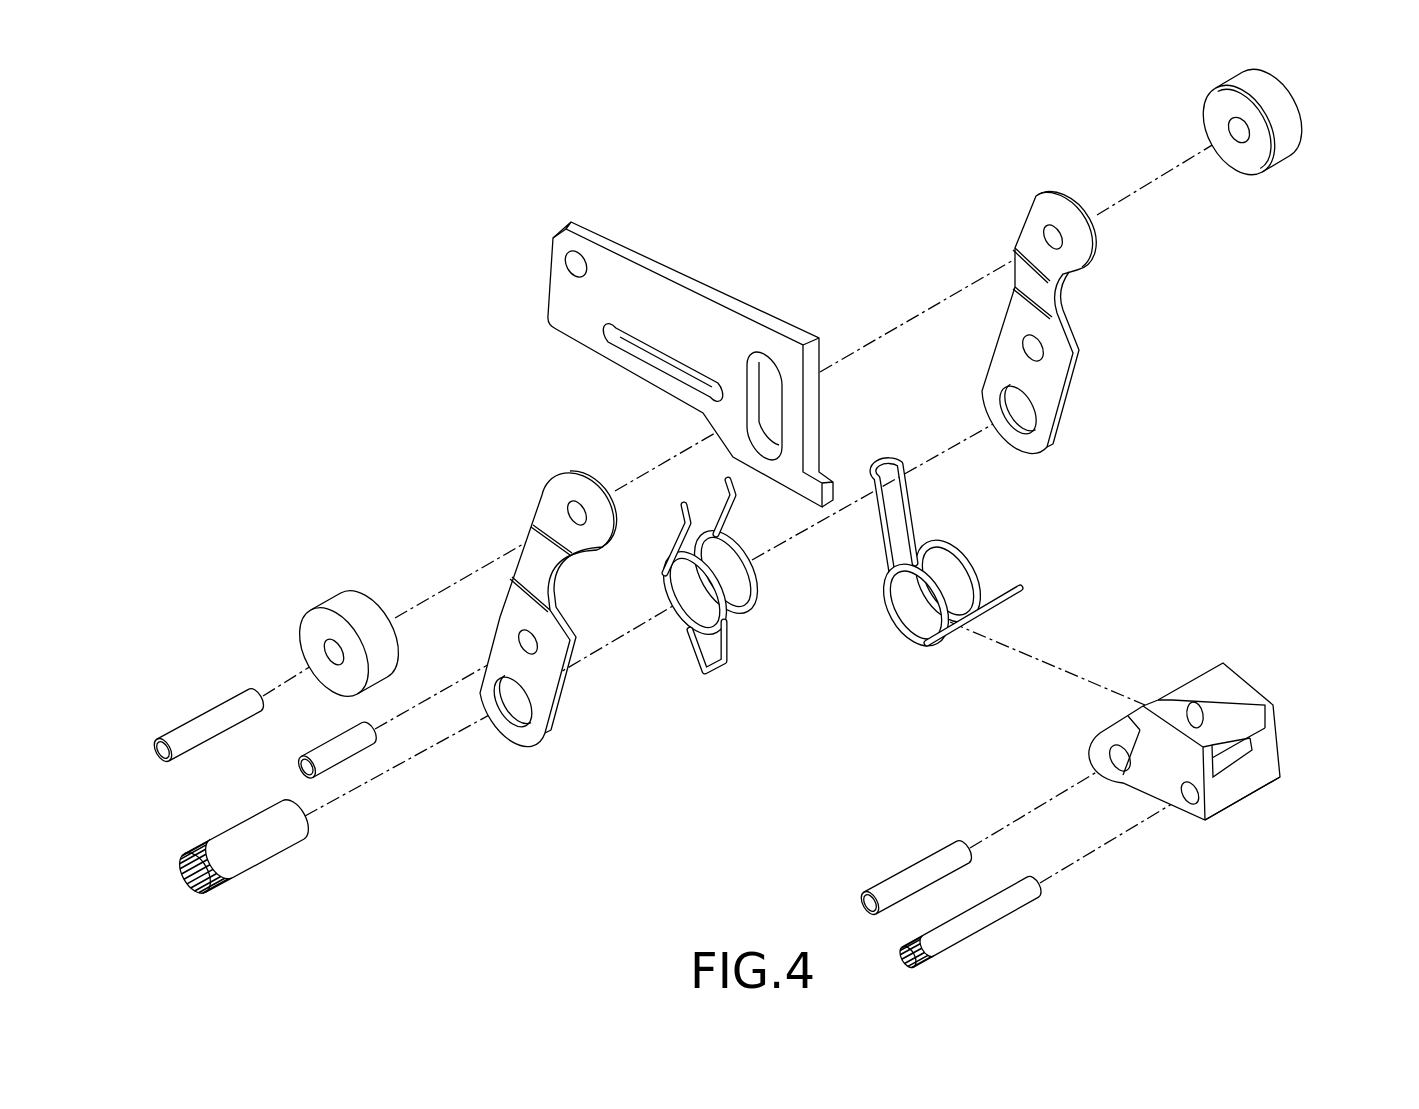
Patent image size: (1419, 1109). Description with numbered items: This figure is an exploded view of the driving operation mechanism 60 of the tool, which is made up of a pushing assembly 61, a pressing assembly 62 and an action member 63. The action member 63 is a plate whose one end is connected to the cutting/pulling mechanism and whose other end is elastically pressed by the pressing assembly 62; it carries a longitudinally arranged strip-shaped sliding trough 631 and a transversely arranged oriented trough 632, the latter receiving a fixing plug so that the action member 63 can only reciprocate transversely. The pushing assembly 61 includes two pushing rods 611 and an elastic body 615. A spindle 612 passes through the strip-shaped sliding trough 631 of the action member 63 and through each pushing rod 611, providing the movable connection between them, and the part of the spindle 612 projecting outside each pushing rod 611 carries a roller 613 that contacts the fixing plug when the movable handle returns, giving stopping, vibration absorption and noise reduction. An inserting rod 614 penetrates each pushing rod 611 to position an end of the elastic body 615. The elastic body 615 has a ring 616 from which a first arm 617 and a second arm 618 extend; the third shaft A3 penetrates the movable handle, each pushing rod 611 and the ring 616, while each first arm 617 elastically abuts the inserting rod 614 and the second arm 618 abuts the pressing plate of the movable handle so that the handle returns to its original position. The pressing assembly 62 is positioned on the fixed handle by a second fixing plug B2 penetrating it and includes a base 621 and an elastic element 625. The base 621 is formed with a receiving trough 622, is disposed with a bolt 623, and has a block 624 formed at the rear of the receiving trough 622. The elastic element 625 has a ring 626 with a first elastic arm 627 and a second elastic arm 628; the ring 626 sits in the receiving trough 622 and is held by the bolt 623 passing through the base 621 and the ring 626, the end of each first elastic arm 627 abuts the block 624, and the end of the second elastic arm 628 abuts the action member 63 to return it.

The driving operation mechanism 60 is at (864, 163).
The pushing assembly 61 is at (720, 505).
The pushing rod 611 is at (512, 612).
The spindle 612 is at (214, 720).
The roller 613 is at (330, 593).
The inserting rod 614 is at (338, 754).
The elastic body 615 is at (741, 628).
The ring 616 is at (760, 598).
The first arm 617 is at (728, 517).
The second arm 618 is at (720, 672).
The pressing assembly 62 is at (1108, 721).
The base 621 is at (1226, 741).
The receiving trough 622 is at (1242, 720).
The bolt 623 is at (912, 878).
The block 624 is at (1238, 784).
The elastic element 625 is at (1018, 559).
The ring 626 is at (973, 557).
The first elastic arm 627 is at (1024, 592).
The second elastic arm 628 is at (910, 500).
The action member 63 is at (653, 338).
The strip-shaped sliding trough 631 is at (765, 375).
The oriented trough 632 is at (633, 347).
The third shaft A3 is at (265, 851).
The second fixing plug B2 is at (993, 921).